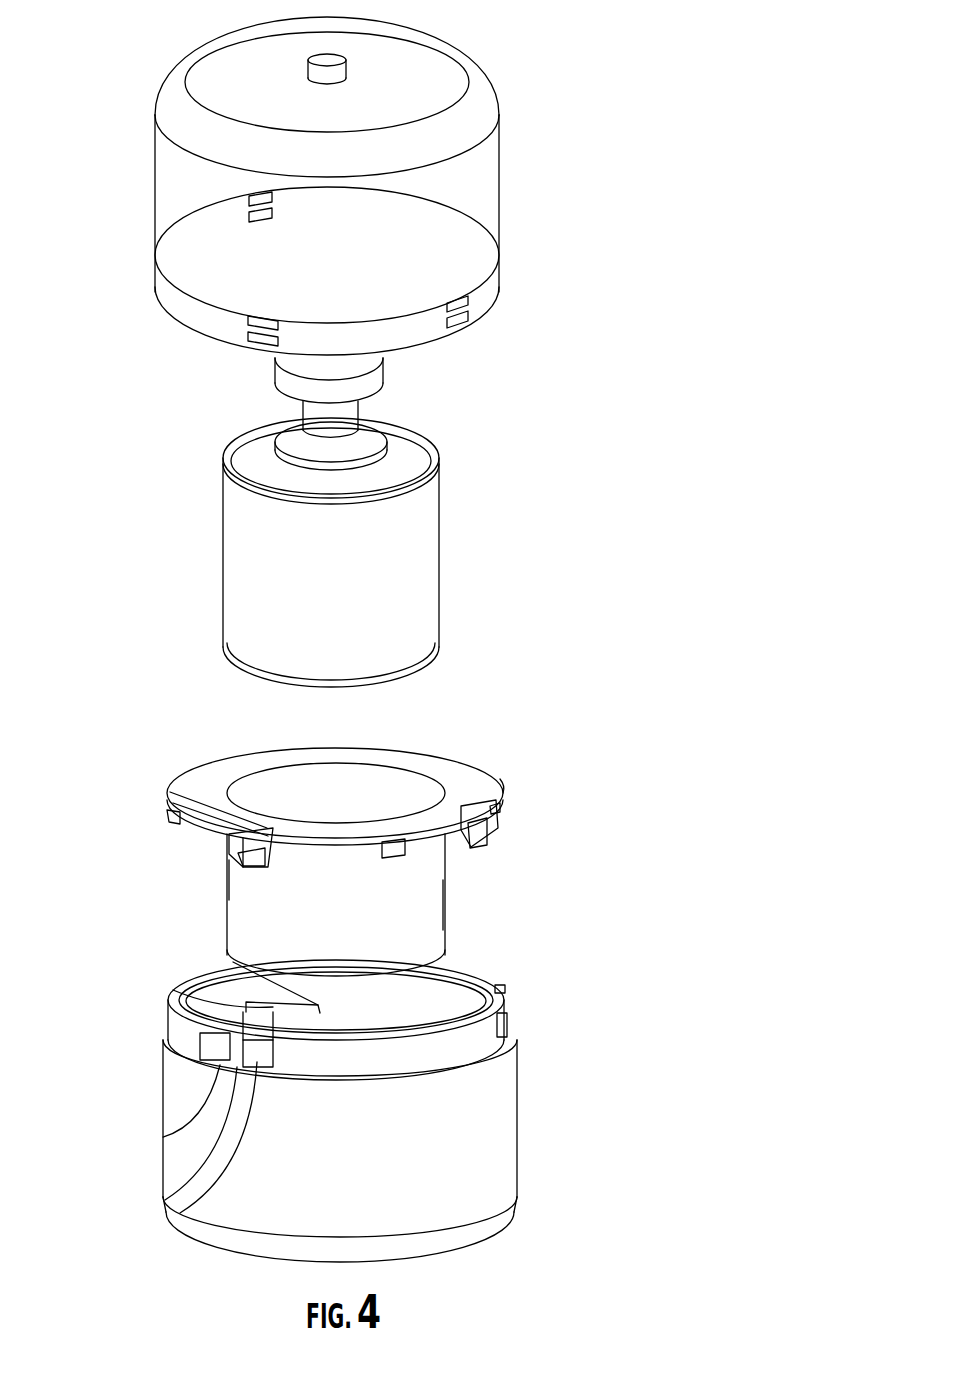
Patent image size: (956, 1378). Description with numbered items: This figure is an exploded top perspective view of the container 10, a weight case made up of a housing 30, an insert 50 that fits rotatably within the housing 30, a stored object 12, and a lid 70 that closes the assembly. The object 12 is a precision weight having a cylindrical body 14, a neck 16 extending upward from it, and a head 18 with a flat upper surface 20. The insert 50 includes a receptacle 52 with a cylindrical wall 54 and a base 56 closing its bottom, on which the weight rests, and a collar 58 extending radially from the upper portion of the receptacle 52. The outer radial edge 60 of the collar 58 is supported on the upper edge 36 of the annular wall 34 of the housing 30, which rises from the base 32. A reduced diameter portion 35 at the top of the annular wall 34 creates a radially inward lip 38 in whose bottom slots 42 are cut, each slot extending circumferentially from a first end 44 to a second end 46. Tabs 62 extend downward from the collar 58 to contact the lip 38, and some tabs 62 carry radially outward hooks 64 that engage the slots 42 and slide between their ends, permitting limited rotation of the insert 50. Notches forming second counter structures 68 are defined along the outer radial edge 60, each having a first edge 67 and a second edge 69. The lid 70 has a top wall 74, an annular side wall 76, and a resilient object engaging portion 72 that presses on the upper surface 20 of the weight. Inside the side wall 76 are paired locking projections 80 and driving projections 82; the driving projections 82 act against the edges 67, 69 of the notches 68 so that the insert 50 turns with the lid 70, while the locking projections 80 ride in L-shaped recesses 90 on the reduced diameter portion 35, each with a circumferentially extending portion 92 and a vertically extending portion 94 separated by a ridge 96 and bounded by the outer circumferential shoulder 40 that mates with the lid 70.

The container 10 is at (612, 740).
The object 12 is at (441, 555).
The cylindrical body 14 is at (441, 615).
The neck 16 is at (360, 410).
The head 18 is at (382, 378).
The upper surface 20 is at (388, 355).
The housing 30 is at (517, 1067).
The base 32 is at (217, 1247).
The annular wall 34 is at (515, 1132).
The reduced diameter portion 35 is at (175, 1022).
The upper edge 36 is at (490, 970).
The lip 38 is at (447, 987).
The outer circumferential shoulder 40 is at (508, 1016).
The slots 42 is at (240, 968).
The first end 44 is at (290, 1005).
The second end 46 is at (233, 962).
The insert 50 is at (463, 843).
The receptacle 52 is at (450, 863).
The cylindrical wall 54 is at (240, 880).
The base 56 is at (450, 912).
The collar 58 is at (475, 768).
The outer radial edge 60 is at (500, 790).
The tabs 62 is at (168, 814).
The hooks 64 is at (240, 853).
The first edges 67 is at (180, 790).
The second counter structures 68 is at (262, 828).
The second edges 69 is at (242, 827).
The lid 70 is at (498, 196).
The object engaging portion 72 is at (347, 70).
The top wall 74 is at (447, 75).
The annular side wall 76 is at (498, 152).
The locking projections 80 is at (250, 216).
The driving projections 82 is at (250, 198).
The L-shaped recesses 90 is at (163, 1125).
The circumferentially extending portion 92 is at (217, 1047).
The vertically extending portion 94 is at (183, 1210).
The ridge 96 is at (163, 1183).